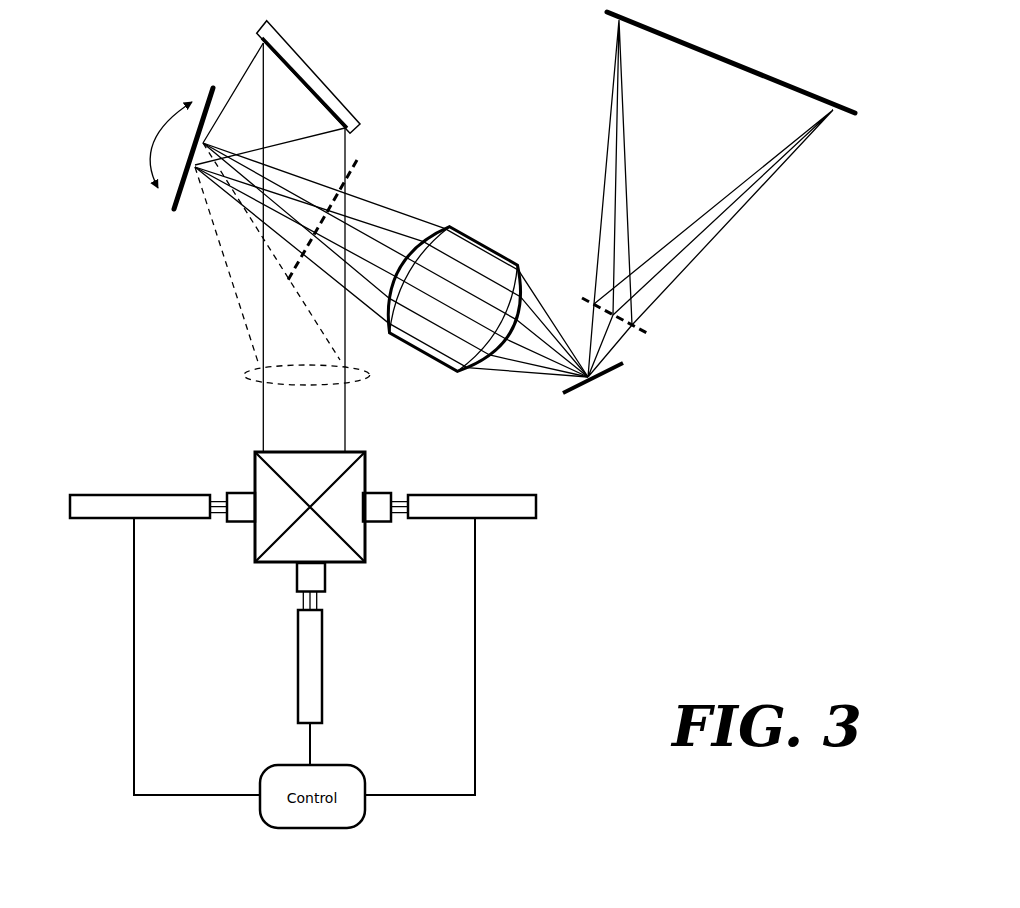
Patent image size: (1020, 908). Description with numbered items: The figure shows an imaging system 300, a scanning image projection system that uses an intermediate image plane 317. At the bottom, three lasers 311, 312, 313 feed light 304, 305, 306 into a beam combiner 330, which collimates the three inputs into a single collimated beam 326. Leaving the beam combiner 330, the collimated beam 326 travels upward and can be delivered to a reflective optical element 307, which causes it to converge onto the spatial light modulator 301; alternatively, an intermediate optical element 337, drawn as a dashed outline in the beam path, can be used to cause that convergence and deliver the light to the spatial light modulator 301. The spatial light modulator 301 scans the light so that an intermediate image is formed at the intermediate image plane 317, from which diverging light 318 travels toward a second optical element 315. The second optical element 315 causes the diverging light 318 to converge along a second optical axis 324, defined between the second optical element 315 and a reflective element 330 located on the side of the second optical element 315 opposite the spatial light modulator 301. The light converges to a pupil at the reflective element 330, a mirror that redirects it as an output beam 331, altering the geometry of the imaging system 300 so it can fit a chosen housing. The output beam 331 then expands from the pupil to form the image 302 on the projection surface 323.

The imaging system 300 is at (114, 335).
The spatial light modulator 301 is at (210, 87).
The image 302 is at (785, 106).
The light 304 is at (222, 517).
The light 305 is at (318, 602).
The light 306 is at (397, 518).
The reflective optical element 307 is at (297, 52).
The red laser 311 is at (140, 495).
The green laser 312 is at (298, 660).
The blue laser 313 is at (507, 520).
The second optical element 315 is at (478, 236).
The intermediate image plane 317 is at (358, 162).
The diverging light 318 is at (398, 216).
The projection surface 323 is at (755, 68).
The second optical axis 324 is at (528, 346).
The collimated beam 326 is at (262, 420).
The beam combiner / reflective element 330 is at (574, 393).
The output beam 331 is at (694, 290).
The intermediate optical element 337 is at (243, 376).